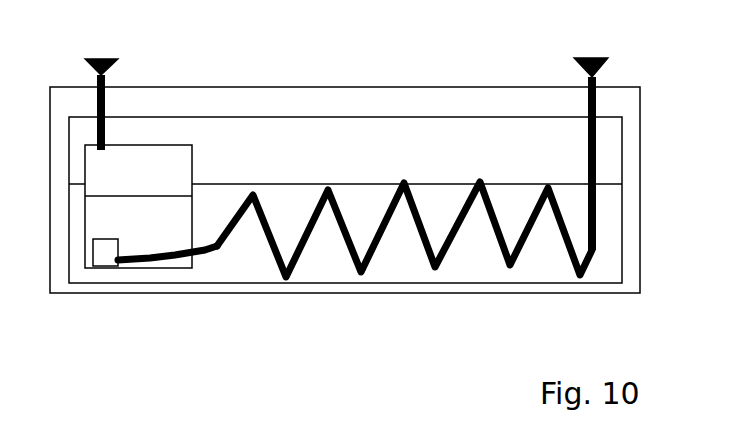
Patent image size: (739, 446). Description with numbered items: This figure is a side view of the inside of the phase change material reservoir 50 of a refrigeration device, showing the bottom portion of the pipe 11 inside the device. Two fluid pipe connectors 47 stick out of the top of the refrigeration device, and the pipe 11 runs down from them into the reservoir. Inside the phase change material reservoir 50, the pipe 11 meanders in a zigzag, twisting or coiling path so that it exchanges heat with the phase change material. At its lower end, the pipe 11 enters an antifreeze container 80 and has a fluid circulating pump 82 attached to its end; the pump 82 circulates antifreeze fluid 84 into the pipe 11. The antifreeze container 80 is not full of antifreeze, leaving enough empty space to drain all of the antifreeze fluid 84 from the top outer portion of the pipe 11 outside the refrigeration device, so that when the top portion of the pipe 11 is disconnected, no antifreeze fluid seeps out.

The pipe 11 is at (595, 125).
The fluid pipe connectors 47 is at (95, 58).
The phase change material reservoir 50 is at (397, 277).
The antifreeze container 80 is at (150, 145).
The fluid circulating pump 82 is at (105, 257).
The antifreeze fluid 84 is at (132, 243).